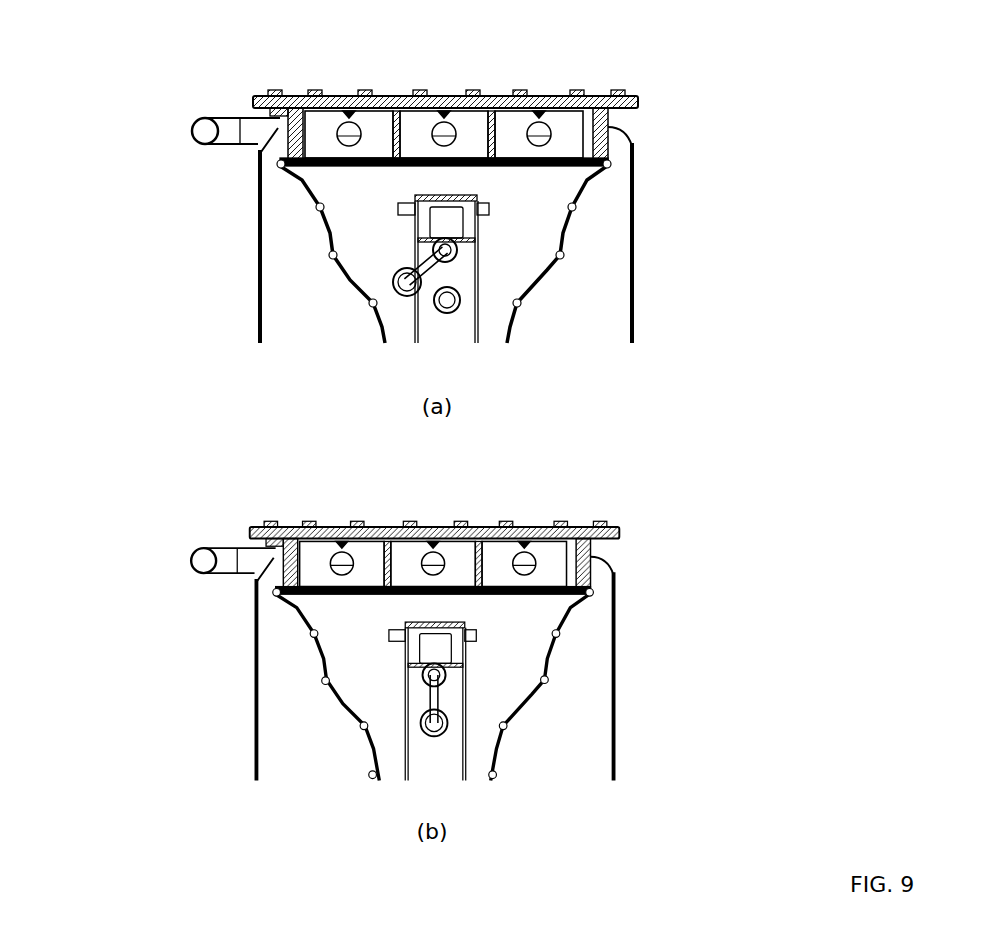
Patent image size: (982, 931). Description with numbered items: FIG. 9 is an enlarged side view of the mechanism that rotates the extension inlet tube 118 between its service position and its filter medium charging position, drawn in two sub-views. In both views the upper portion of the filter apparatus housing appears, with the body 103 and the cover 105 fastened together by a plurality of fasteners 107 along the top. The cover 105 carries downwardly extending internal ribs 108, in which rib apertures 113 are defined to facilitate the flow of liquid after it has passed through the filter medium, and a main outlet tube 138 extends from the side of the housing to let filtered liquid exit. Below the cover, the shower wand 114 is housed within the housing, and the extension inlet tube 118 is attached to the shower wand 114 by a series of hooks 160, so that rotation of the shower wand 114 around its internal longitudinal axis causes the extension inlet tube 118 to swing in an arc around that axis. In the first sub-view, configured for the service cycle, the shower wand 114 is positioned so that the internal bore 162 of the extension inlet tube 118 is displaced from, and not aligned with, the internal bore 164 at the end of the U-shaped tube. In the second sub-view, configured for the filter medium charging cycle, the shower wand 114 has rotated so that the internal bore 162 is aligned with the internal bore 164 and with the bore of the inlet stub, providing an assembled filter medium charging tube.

The body 103 is at (512, 327).
The cover 105 is at (598, 103).
The fasteners 107 is at (417, 92).
The internal ribs 108 is at (495, 118).
The rib apertures 113 is at (400, 130).
The shower wand 114 is at (445, 250).
The extension inlet tube 118 is at (430, 267).
The main outlet tube 138 is at (230, 127).
The hooks 160 is at (432, 265).
The internal bore 162 is at (405, 287).
The internal bore 164 is at (448, 312).